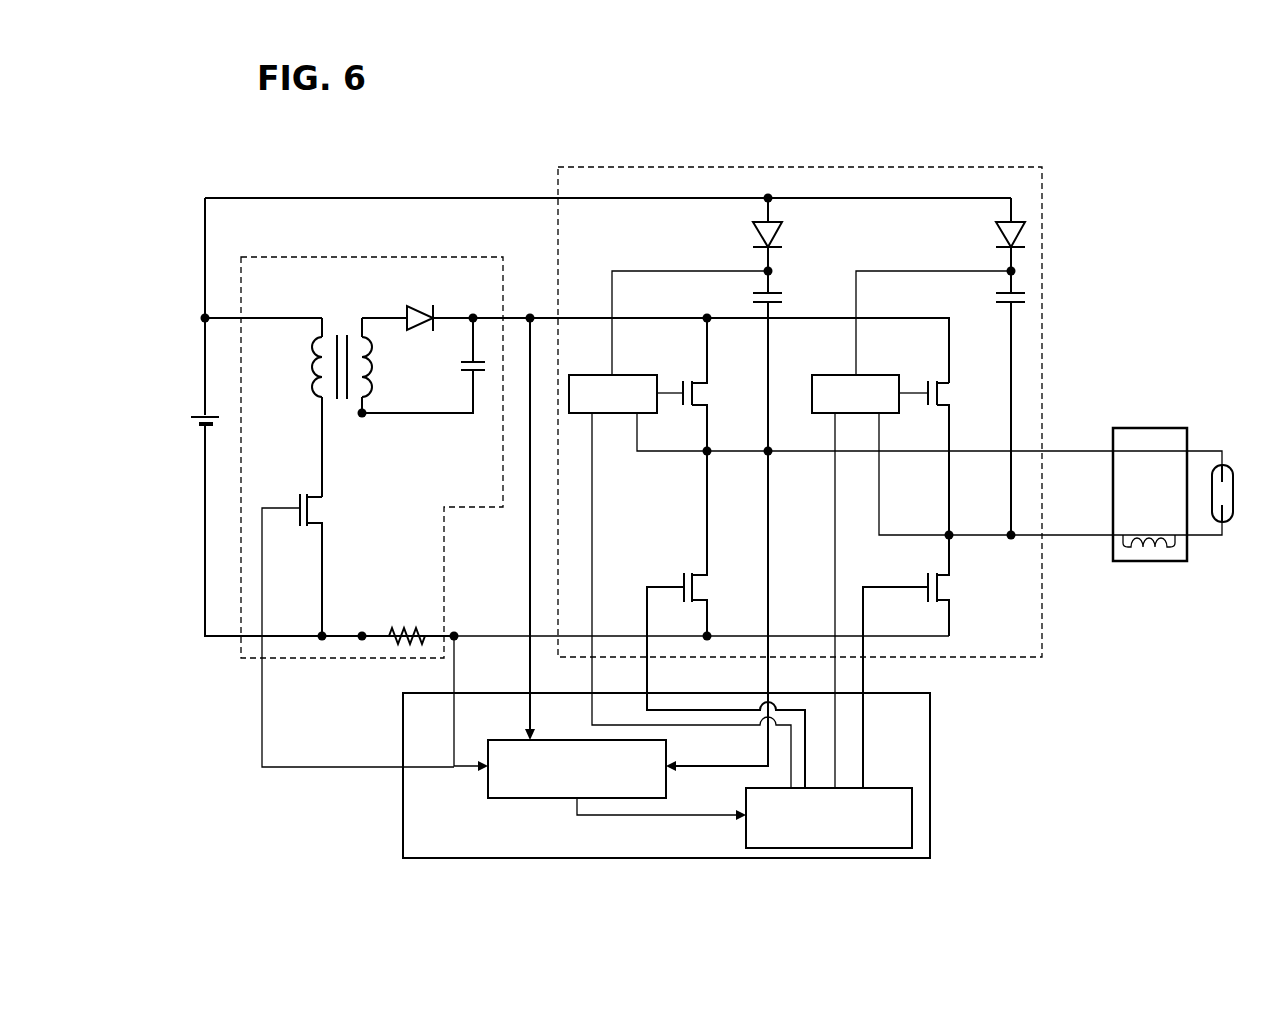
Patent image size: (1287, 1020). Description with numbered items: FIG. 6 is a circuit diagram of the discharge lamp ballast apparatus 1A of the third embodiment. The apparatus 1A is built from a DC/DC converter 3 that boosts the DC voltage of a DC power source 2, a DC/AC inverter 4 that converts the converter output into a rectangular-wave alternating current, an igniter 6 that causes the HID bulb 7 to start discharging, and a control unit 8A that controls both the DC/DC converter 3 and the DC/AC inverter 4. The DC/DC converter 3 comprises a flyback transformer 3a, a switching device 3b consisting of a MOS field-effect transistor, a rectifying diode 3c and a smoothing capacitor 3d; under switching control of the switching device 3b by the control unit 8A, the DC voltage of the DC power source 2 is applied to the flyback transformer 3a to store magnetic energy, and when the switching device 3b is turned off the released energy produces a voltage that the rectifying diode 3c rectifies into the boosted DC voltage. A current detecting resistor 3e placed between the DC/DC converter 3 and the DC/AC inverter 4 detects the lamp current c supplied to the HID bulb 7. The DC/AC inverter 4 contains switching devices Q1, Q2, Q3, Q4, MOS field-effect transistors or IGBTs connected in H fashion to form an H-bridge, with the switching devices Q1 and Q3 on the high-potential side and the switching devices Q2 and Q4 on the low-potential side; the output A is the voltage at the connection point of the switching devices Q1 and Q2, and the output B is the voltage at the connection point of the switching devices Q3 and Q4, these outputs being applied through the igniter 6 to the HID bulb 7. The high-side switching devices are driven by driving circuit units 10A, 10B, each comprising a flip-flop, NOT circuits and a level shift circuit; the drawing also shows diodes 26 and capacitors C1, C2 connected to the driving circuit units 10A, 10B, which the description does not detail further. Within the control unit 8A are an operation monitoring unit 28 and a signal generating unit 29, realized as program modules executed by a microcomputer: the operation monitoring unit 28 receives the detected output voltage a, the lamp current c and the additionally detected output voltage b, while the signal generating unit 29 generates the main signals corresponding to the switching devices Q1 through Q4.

The discharge lamp ballast apparatus 1A is at (466, 187).
The DC power source 2 is at (196, 415).
The DC/DC converter 3 is at (273, 257).
The flyback transformer 3a is at (343, 330).
The switching device 3b is at (298, 495).
The rectifying diode 3c is at (415, 312).
The smoothing capacitor 3d is at (458, 369).
The current detecting resistor 3e is at (409, 625).
The DC/AC inverter 4 is at (1045, 198).
The diode 26 is at (784, 235).
The bootstrap capacitor C1 is at (786, 299).
The bootstrap capacitor C2 is at (993, 299).
The driving circuit unit 10A is at (637, 375).
The driving circuit unit 10B is at (882, 375).
The switching device Q1 is at (704, 394).
The switching device Q2 is at (704, 587).
The switching device Q3 is at (950, 394).
The switching device Q4 is at (950, 587).
The igniter 6 is at (1148, 428).
The HID bulb 7 is at (1235, 494).
The control unit 8A is at (396, 838).
The operation monitoring unit 28 is at (515, 740).
The signal generating unit 29 is at (882, 788).
The output A is at (1075, 451).
The output B is at (1075, 540).
The output voltage a is at (525, 676).
The output voltage b is at (764, 677).
The lamp current c is at (449, 676).